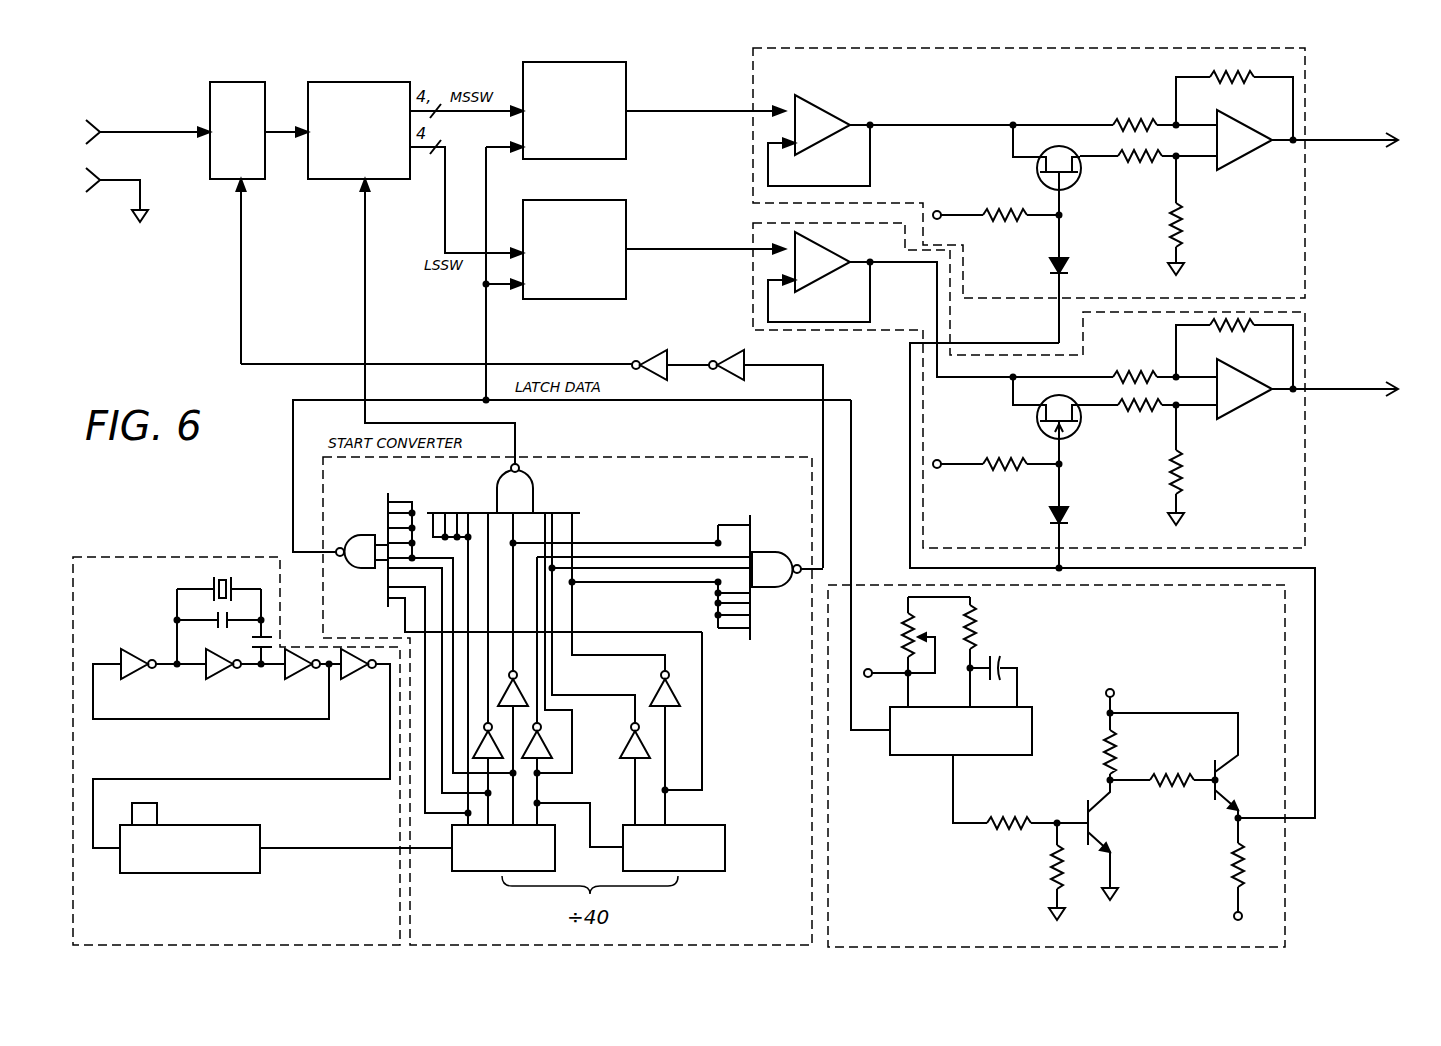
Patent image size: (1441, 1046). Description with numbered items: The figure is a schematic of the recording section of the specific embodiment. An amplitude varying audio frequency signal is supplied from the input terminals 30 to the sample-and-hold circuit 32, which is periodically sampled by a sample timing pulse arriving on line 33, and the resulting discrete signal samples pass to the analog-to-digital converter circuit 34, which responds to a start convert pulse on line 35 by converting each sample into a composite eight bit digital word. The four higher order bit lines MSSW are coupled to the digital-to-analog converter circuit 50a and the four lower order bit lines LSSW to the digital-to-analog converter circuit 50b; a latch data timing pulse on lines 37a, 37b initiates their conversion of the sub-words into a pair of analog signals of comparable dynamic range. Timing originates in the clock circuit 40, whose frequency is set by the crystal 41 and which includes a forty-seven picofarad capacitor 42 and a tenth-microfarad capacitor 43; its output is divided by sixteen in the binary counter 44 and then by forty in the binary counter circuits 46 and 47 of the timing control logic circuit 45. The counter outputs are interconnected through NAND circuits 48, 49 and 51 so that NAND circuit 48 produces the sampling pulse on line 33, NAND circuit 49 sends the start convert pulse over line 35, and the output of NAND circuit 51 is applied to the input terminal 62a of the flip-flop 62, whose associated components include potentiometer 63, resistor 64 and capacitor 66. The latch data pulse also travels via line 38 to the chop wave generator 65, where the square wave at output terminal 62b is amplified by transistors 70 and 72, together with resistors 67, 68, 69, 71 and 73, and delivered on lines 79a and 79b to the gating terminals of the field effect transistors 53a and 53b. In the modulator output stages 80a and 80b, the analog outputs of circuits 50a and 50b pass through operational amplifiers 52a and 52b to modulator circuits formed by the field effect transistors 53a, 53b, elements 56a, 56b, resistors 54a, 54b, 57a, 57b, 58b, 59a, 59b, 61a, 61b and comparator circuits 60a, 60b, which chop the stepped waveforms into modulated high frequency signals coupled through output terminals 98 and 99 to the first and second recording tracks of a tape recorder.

The input terminals 30 is at (94, 136).
The sample-and-hold circuit 32 is at (208, 96).
The line 33 is at (243, 305).
The analog-to-digital converter circuit 34 is at (322, 179).
The line 35 is at (367, 303).
The line 37a is at (523, 150).
The line 37b is at (523, 287).
The line 38 is at (852, 562).
The crystal controlled clock circuit 40 is at (140, 555).
The crystal 41 is at (212, 584).
The capacitor 42 is at (216, 620).
The capacitor 43 is at (255, 650).
The divide-by-sixteen binary counter 44 is at (212, 825).
The timing control logic circuit 45 is at (580, 455).
The binary counter circuit 46 is at (470, 871).
The binary counter circuit 47 is at (700, 871).
The NAND circuit 48 is at (773, 547).
The NAND circuit 49 is at (532, 492).
The digital-to-analog converter circuit 50a is at (626, 86).
The digital-to-analog converter circuit 50b is at (614, 200).
The NAND circuit 51 is at (367, 533).
The operational amplifier 52a is at (838, 113).
The operational amplifier 52b is at (838, 250).
The field effect transistor 53a is at (1078, 186).
The field effect transistor 53b is at (1037, 428).
The resistor 54a is at (996, 221).
The resistor 54b is at (996, 470).
The diode 56a is at (1070, 266).
The diode 56b is at (1070, 512).
The resistor 57a is at (1112, 121).
The resistor 57b is at (1140, 372).
The resistor 58b is at (1134, 413).
The resistor 59a is at (1185, 226).
The resistor 59b is at (1185, 479).
The comparator circuit 60a is at (1242, 168).
The comparator circuit 60b is at (1240, 418).
The resistor 61a is at (1240, 80).
The resistor 61b is at (1240, 330).
The flip-flop 62 is at (1005, 755).
The flip-flop input 62a is at (890, 735).
The output terminal 62b is at (950, 766).
The potentiometer 63 is at (912, 630).
The resistor 64 is at (985, 630).
The chop wave generator 65 is at (1285, 712).
The capacitor 66 is at (1002, 665).
The resistor 67 is at (1000, 833).
The resistor 68 is at (1050, 882).
The resistor 69 is at (1118, 756).
The transistor 70 is at (1115, 838).
The resistor 71 is at (1168, 790).
The transistor 72 is at (1222, 796).
The resistor 73 is at (1232, 873).
The line 79a is at (1058, 327).
The line 79b is at (1059, 541).
The modulator output stage 80a is at (1305, 242).
The modulator output stage 80b is at (1307, 318).
The output terminal 98 is at (1400, 144).
The output terminal 99 is at (1400, 393).